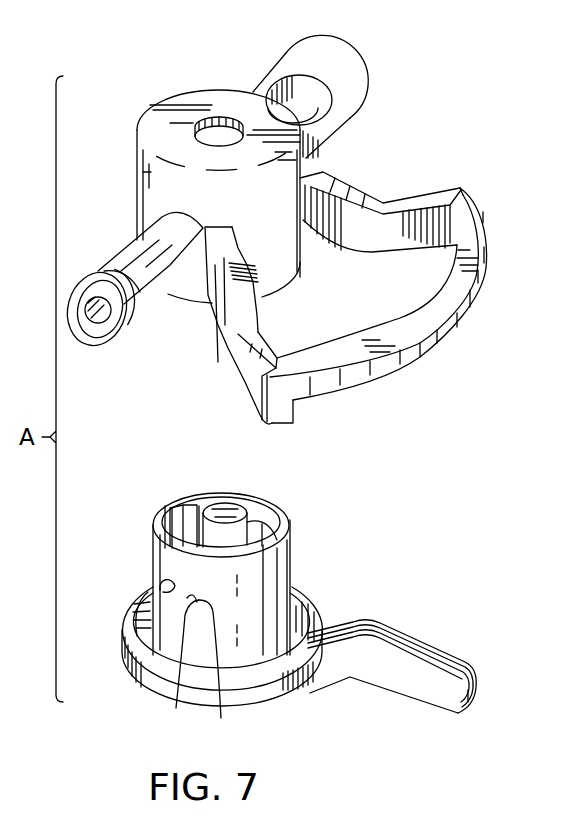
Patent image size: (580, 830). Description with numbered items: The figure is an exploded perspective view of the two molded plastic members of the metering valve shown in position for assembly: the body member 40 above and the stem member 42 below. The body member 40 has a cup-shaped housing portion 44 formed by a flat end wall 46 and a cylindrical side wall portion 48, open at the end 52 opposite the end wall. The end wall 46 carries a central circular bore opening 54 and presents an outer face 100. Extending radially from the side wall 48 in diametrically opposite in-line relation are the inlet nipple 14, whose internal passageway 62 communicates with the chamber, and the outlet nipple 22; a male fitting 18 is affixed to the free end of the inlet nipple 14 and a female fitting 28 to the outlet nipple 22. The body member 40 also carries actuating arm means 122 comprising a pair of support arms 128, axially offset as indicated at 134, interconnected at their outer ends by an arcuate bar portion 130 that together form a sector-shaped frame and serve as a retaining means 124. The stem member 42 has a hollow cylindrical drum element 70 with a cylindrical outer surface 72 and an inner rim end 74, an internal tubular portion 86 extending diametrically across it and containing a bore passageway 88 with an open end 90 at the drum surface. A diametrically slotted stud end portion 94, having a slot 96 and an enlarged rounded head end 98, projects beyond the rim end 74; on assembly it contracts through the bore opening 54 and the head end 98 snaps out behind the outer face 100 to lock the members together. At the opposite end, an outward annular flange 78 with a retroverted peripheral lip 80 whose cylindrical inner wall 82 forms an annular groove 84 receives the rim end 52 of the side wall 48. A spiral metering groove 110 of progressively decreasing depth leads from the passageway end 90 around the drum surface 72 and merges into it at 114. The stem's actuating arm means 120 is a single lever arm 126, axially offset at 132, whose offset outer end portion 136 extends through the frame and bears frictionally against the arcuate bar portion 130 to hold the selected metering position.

The body member 40 is at (290, 215).
The cup-shaped housing portion 44 is at (185, 176).
The flat end wall 46 is at (160, 105).
The cylindrical side wall portion 48 is at (145, 173).
The open end of housing portion 52 is at (177, 294).
The circular bore opening 54 is at (233, 120).
The outer face of end wall 100 is at (240, 108).
The female fitting 28 is at (329, 83).
The outlet tube or nipple 22 is at (333, 99).
The inlet connector tube or nipple 14 is at (130, 305).
The male fitting 18 is at (88, 340).
The internal passageway of inlet nipple 62 is at (104, 318).
The actuating arm means on body member 122 is at (343, 269).
The retaining means 124 is at (432, 366).
The support arms 128 is at (333, 176).
The arcuate bar portion 130 is at (337, 362).
The axial offset of support arms 134 is at (352, 230).
The stem member 42 is at (274, 593).
The cylindrical drum element 70 is at (220, 543).
The cylindrical outer surface of drum 72 is at (272, 572).
The inner rim end of drum 74 is at (173, 502).
The internal tubular portion 86 is at (270, 533).
The slotted cylindrical stud end portion 94 is at (262, 518).
The diametrical slot 96 is at (214, 500).
The rounded or tapered head end 98 is at (237, 508).
The retroverted peripheral lip 80 is at (187, 645).
The outward annular flange 78 is at (150, 690).
The cylindrical inner wall of lip 82 is at (148, 599).
The annular groove 84 is at (143, 620).
The bore passageway 88 is at (162, 586).
The open end of bore passageway 90 is at (160, 590).
The metering groove 110 is at (172, 666).
The merging end of metering groove 114 is at (221, 673).
The actuating arm means on stem member 120 is at (422, 666).
The lever arm 126 is at (380, 621).
The axial offset of lever arm 132 is at (320, 676).
The offset outer end portion of lever arm 136 is at (427, 708).